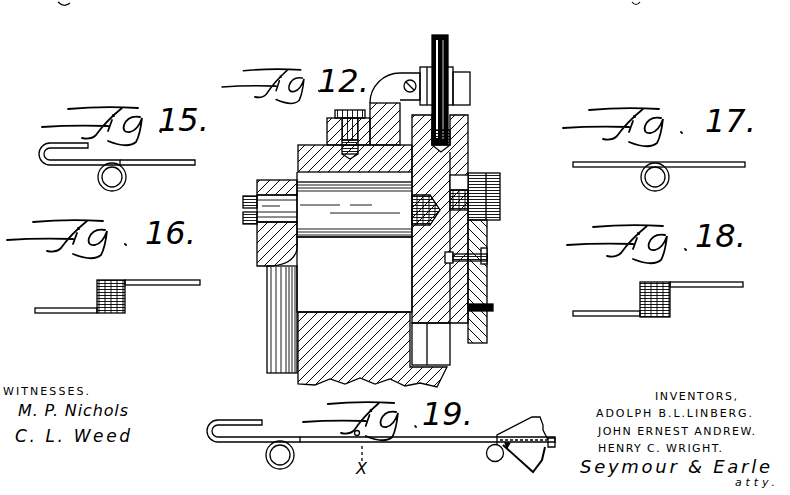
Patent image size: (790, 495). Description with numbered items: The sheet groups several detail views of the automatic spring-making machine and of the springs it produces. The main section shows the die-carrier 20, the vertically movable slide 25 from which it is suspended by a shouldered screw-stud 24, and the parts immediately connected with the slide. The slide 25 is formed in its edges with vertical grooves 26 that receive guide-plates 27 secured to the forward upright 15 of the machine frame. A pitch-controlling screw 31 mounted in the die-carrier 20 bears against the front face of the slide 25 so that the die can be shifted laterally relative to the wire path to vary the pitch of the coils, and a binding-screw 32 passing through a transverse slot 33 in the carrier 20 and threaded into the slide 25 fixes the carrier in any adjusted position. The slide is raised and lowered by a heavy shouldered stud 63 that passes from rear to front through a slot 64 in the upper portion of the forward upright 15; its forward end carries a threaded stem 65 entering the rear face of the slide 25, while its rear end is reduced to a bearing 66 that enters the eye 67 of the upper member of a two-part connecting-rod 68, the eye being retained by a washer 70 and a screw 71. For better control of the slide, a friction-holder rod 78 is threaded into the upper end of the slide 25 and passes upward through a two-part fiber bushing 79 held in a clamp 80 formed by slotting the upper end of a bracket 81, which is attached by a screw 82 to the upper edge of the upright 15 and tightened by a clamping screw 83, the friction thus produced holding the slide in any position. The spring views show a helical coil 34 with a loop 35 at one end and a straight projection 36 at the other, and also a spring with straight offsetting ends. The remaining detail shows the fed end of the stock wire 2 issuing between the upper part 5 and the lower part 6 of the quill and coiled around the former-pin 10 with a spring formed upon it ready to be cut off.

In FIG. 19, the stock wire 2 is at (553, 441).
In FIG. 19, the upper part of the quill 5 is at (533, 417).
In FIG. 19, the lower part of the quill 6 is at (542, 454).
In FIG. 19, the former-pin 10 is at (491, 458).
In FIG. 12, the forward upright 15 is at (306, 145).
In FIG. 12, the die-carrier 20 is at (489, 242).
In FIG. 12, the shouldered screw-stud 24 is at (500, 207).
In FIG. 12, the vertically movable slide 25 is at (470, 147).
In FIG. 12, the vertical grooves 26 is at (462, 170).
In FIG. 12, the guide-plates 27 is at (447, 351).
In FIG. 12, the pitch-controlling screw 31 is at (494, 306).
In FIG. 12, the binding-screw 32 is at (488, 262).
In FIG. 12, the transverse slot 33 is at (489, 251).
In FIG. 15, the helical coil 34 is at (126, 181).
In FIG. 16, the helical coil 34 is at (127, 295).
In FIG. 19, the helical coil 34 is at (266, 459).
In FIG. 15, the loop 35 is at (42, 147).
In FIG. 16, the loop 35 is at (61, 308).
In FIG. 19, the loop 35 is at (224, 420).
In FIG. 15, the straight projection 36 is at (176, 160).
In FIG. 16, the straight projection 36 is at (176, 280).
In FIG. 19, the straight projection 36 is at (323, 444).
In FIG. 12, the shouldered stud 63 is at (366, 226).
In FIG. 12, the slot 64 is at (354, 274).
In FIG. 12, the threaded stem 65 is at (405, 232).
In FIG. 12, the bearing 66 is at (279, 195).
In FIG. 12, the eye 67 is at (268, 248).
In FIG. 12, the two-part connecting-rod 68 is at (268, 302).
In FIG. 12, the washer 70 is at (256, 190).
In FIG. 12, the screw 71 is at (250, 220).
In FIG. 12, the rod 78 is at (449, 48).
In FIG. 12, the two-part fiber bushing 79 is at (426, 67).
In FIG. 12, the clamp 80 is at (472, 84).
In FIG. 12, the bracket 81 is at (327, 120).
In FIG. 12, the screw 82 is at (348, 110).
In FIG. 12, the clamping screw 83 is at (407, 81).